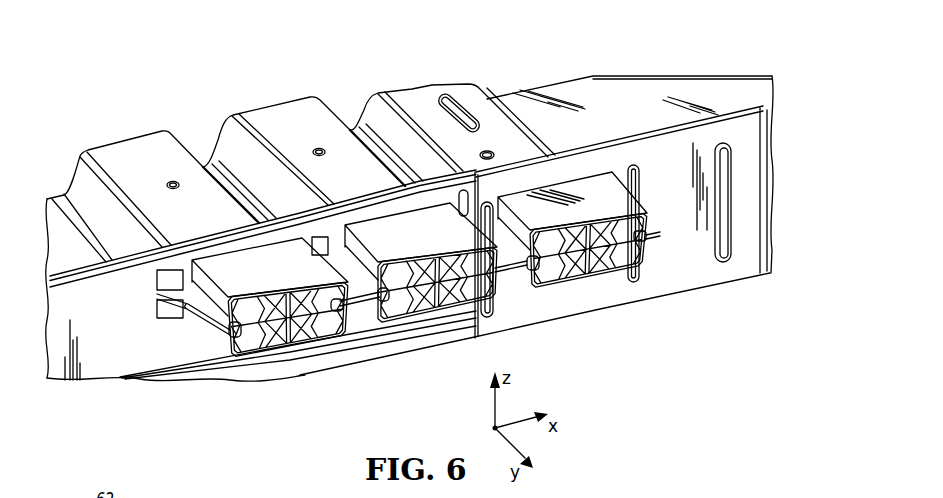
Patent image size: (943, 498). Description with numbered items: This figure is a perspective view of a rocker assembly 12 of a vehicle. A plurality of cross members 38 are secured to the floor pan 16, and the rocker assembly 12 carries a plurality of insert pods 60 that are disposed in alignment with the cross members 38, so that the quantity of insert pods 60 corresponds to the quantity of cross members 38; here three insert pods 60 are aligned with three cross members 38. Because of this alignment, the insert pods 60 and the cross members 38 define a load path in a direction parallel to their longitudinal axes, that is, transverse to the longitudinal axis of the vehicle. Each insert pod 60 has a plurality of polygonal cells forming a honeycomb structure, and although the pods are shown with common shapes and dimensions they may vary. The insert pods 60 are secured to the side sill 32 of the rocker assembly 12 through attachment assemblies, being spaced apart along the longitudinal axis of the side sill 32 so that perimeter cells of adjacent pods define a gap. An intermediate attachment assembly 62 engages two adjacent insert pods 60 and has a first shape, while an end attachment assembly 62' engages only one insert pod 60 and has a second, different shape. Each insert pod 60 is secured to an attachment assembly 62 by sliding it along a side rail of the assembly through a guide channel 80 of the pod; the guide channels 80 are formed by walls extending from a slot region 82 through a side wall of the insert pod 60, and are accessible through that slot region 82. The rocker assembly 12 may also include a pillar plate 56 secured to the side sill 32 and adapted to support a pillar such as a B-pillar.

The rocker assembly 12 is at (703, 306).
The floor pan 16 is at (637, 77).
The side sill 32 is at (108, 380).
The cross member 38 is at (133, 133).
The pillar plate 56 is at (633, 308).
The insert pod 60 is at (277, 357).
The attachment assembly 62 is at (495, 313).
The end attachment assembly 62' is at (351, 313).
The guide channel 80 is at (242, 340).
The slot region 82 is at (230, 330).